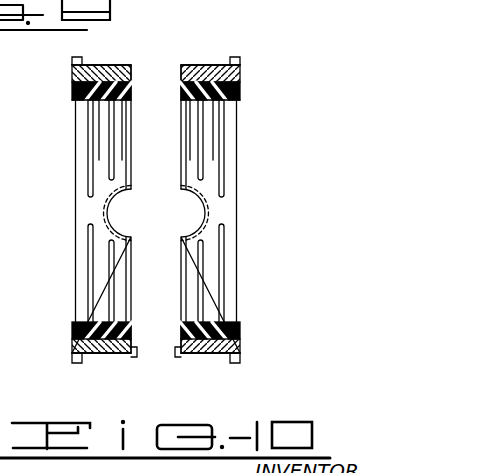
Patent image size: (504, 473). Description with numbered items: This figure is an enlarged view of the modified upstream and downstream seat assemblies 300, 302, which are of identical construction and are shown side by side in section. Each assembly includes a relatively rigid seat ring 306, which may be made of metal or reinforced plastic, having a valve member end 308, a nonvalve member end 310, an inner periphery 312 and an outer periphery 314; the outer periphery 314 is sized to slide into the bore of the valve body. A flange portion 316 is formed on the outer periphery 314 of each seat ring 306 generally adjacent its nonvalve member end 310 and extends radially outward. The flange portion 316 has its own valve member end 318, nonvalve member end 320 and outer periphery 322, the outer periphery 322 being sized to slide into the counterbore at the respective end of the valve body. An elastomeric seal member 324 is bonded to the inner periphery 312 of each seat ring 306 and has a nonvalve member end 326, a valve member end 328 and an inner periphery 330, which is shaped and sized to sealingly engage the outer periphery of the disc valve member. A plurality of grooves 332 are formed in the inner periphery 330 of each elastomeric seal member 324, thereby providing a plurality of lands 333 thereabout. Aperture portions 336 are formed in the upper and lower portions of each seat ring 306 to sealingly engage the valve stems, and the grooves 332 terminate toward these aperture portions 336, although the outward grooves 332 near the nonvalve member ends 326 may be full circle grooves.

The upstream seat assembly 300 is at (118, 64).
The downstream seat assembly 302 is at (196, 45).
The seat ring 306 is at (103, 355).
The valve member end 308 is at (133, 84).
The nonvalve member end 310 is at (74, 82).
The inner periphery 312 is at (72, 332).
The outer periphery 314 is at (88, 363).
The flange portion 316 is at (78, 57).
The valve member end 318 is at (85, 64).
The nonvalve member end 320 is at (72, 73).
The outer periphery 322 is at (74, 364).
The elastomeric seal member 324 is at (78, 101).
The nonvalve member end 326 is at (75, 95).
The valve member end 328 is at (132, 82).
The inner periphery 330 is at (78, 136).
The grooves 332 is at (109, 320).
The lands 333 is at (123, 160).
The aperture portions 336 is at (117, 191).